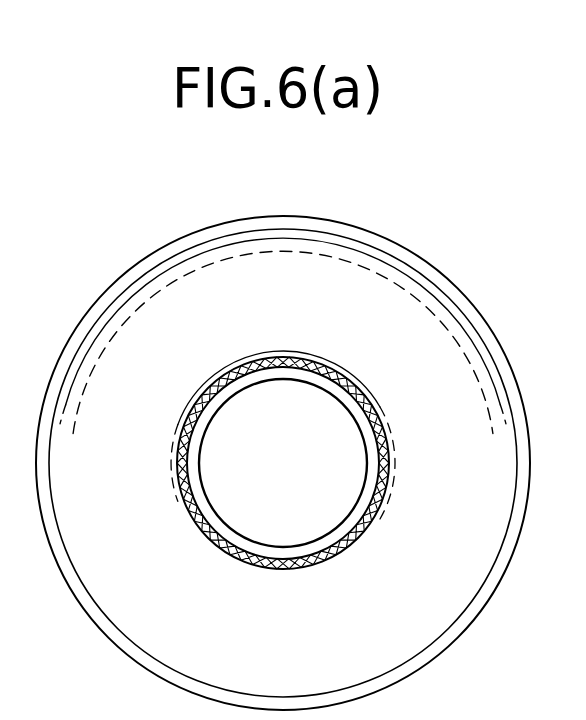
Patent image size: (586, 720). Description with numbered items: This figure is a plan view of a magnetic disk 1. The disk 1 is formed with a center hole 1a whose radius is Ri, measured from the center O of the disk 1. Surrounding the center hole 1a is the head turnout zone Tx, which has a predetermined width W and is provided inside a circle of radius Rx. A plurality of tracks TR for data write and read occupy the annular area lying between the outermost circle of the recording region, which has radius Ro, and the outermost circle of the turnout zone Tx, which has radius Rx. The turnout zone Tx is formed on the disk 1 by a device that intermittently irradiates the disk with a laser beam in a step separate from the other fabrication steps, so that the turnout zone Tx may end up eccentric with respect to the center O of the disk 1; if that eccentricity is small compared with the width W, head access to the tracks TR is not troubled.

The disk 1 is at (133, 263).
The center hole 1a is at (210, 406).
The tracks TR is at (356, 379).
The head turnout zone Tx is at (217, 449).
The radius of the outermost circle of the recording region Ro is at (283, 455).
The radius of the center hole Ri is at (226, 403).
The radius of the outermost circle of the turnout zone Rx is at (279, 462).
The center of the disk O is at (302, 470).